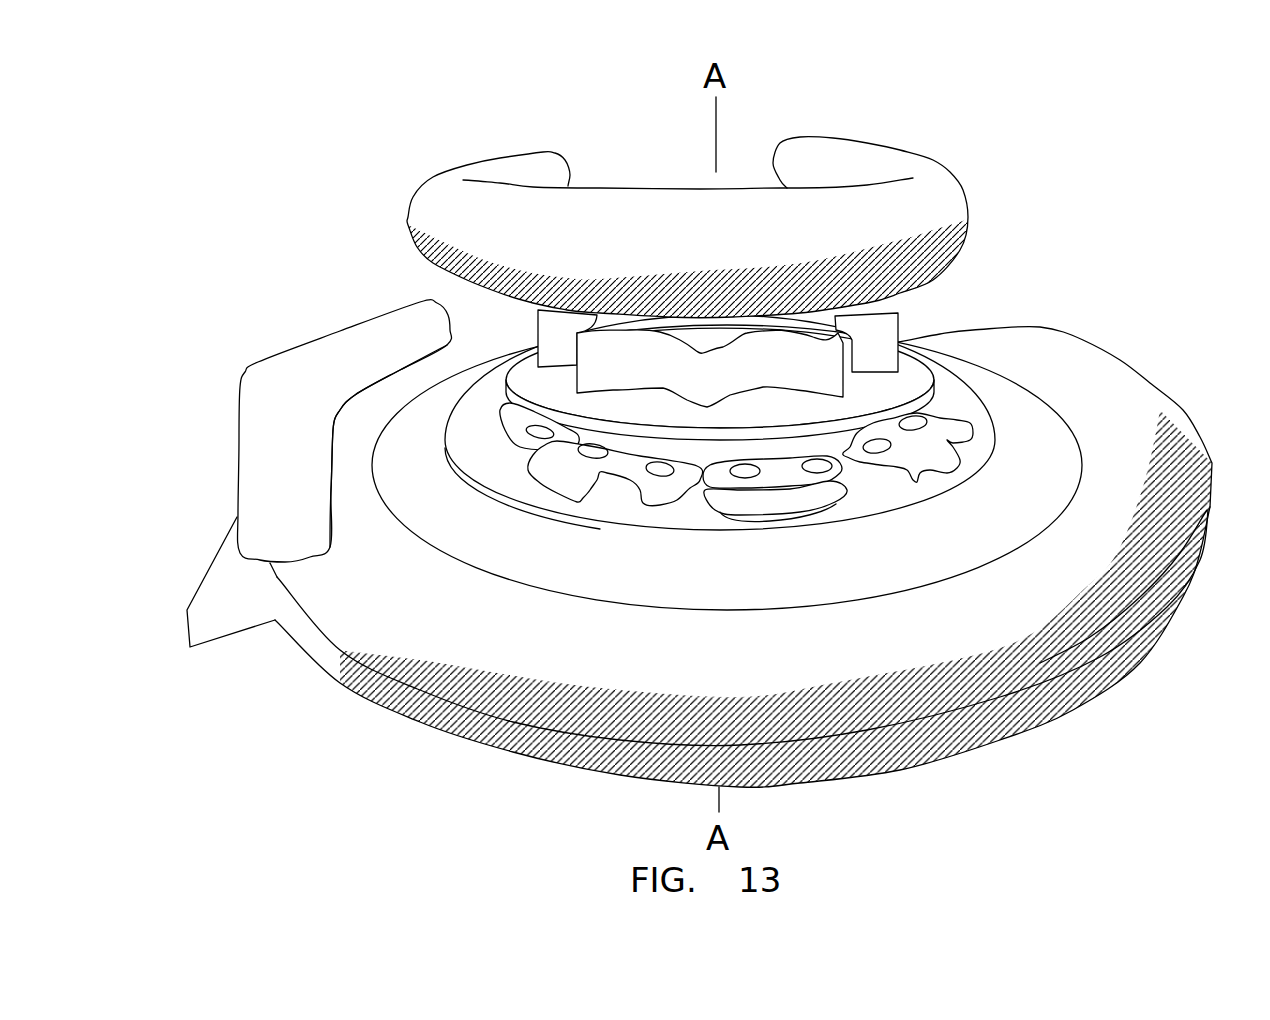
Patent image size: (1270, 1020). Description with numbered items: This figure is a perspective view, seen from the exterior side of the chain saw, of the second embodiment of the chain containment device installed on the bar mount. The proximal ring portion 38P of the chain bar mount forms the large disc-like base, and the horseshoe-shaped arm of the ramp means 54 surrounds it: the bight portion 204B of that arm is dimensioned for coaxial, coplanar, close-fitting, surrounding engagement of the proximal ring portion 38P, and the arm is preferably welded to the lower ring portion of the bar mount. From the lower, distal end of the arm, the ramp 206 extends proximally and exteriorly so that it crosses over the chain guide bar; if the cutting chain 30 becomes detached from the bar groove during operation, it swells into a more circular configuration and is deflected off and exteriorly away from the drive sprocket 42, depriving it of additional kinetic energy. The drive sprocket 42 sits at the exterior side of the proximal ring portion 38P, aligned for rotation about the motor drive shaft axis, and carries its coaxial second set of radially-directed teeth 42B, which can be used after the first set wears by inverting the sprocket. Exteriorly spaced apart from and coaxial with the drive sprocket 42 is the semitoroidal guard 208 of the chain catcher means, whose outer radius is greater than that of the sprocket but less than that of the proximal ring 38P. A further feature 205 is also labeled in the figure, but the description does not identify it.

The cutting chain 30 is at (937, 453).
The proximal ring portion 38P is at (837, 570).
The bight portion 204B is at (793, 713).
The annular recess 205 is at (483, 357).
The ramp 206 is at (267, 357).
The ramp means 54 is at (293, 300).
The drive sprocket 42 is at (1045, 328).
The second set of radially-directed teeth 42B is at (880, 340).
The guard 208 is at (665, 240).